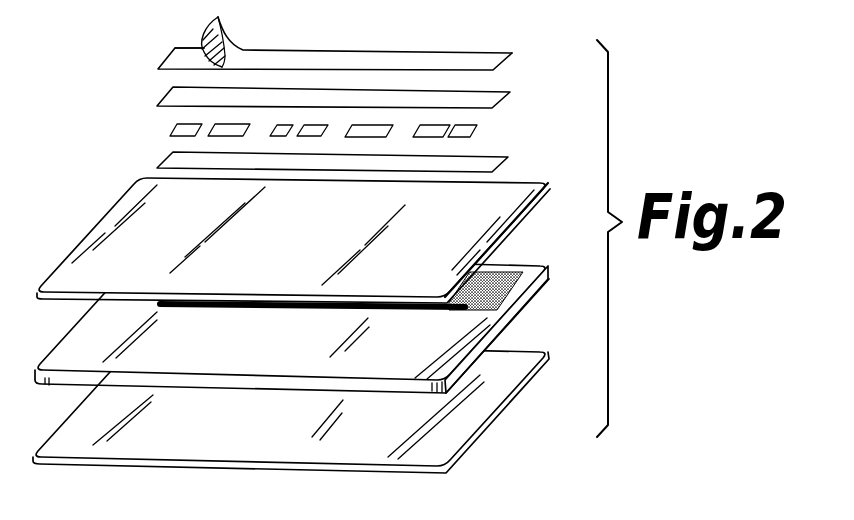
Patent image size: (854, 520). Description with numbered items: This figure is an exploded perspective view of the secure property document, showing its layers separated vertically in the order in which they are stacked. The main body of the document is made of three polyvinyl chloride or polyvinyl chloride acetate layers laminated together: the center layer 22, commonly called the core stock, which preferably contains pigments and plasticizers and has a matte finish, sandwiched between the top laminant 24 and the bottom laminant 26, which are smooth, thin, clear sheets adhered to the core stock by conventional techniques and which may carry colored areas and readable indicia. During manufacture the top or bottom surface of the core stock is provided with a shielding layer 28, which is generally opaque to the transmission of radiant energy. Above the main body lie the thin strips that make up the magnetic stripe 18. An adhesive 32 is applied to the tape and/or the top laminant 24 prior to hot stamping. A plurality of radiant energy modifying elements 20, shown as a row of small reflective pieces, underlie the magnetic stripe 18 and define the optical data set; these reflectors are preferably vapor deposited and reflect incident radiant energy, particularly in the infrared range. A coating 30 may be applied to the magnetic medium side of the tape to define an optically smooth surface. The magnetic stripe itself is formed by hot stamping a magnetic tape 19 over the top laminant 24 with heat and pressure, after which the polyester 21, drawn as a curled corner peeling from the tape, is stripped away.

The magnetic stripe 18 is at (172, 55).
The magnetic tape 19 is at (336, 48).
The polyester 21 is at (222, 28).
The coating 30 is at (508, 96).
The radiant energy modifying elements 20 is at (477, 129).
The adhesive 32 is at (510, 160).
The top laminant 24 is at (279, 270).
The shielding layer 28 is at (500, 275).
The center layer 22 is at (276, 365).
The bottom laminant 26 is at (278, 445).